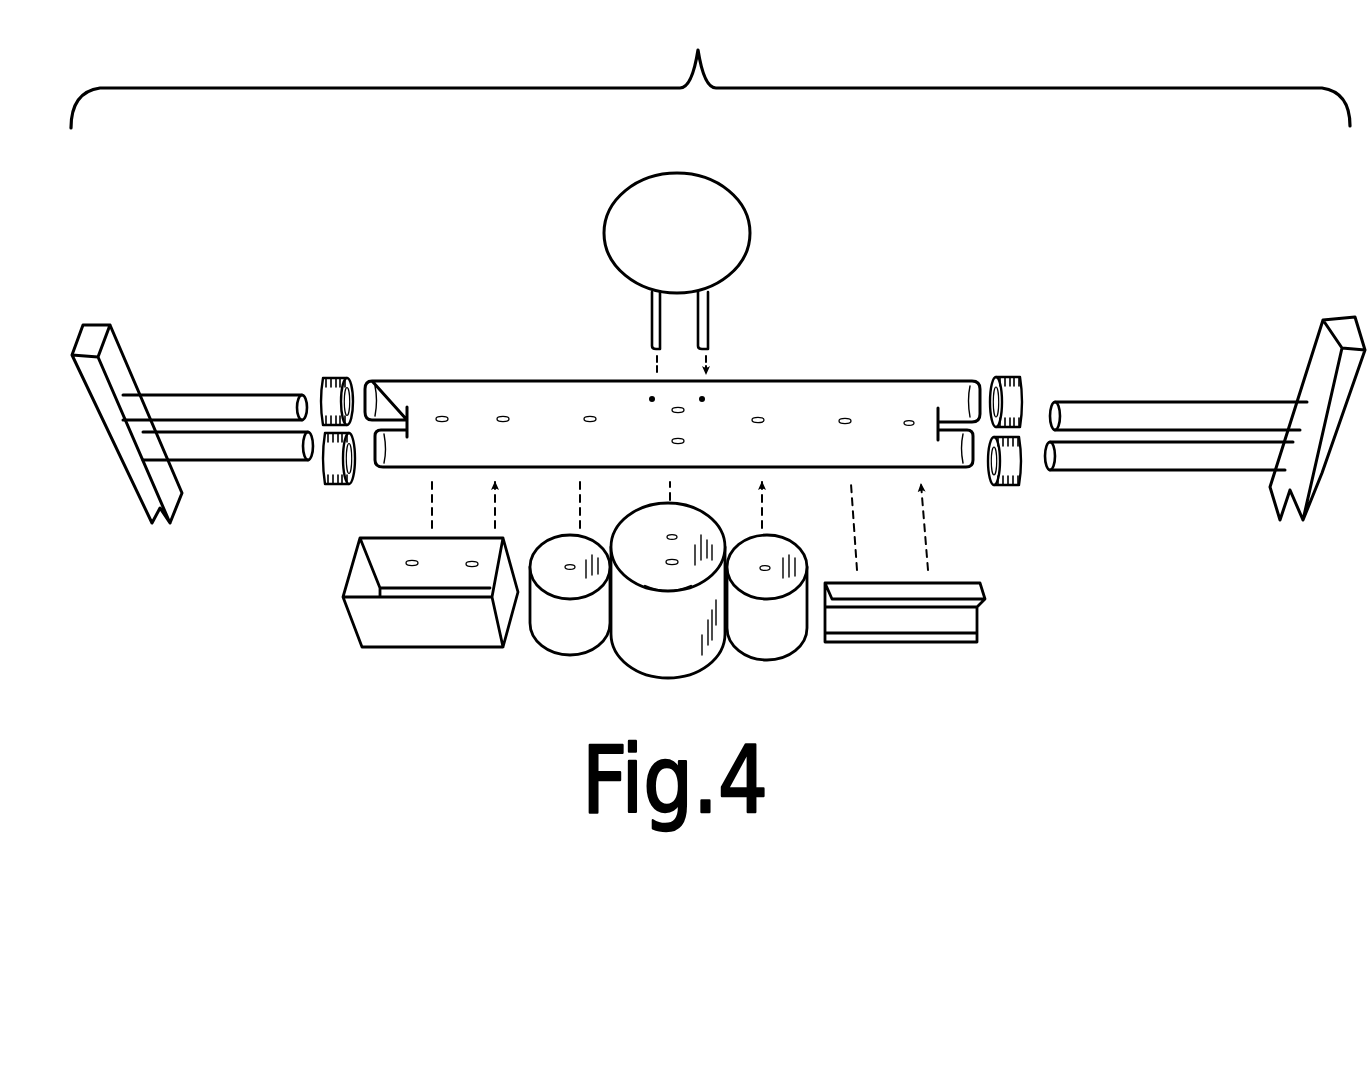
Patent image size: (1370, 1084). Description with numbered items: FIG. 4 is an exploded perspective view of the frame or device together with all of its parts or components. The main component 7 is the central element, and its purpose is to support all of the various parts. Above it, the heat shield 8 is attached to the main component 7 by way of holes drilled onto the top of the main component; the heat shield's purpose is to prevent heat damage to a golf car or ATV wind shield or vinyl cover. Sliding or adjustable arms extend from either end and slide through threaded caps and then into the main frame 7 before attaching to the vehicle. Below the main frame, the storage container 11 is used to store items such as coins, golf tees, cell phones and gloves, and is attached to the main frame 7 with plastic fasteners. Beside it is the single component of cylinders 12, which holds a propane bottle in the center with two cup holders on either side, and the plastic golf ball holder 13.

The main component 7 is at (915, 377).
The heat shield 8 is at (714, 172).
The storage container 11 is at (428, 660).
The cylinders 12 is at (688, 687).
The plastic golf ball holder 13 is at (899, 653).